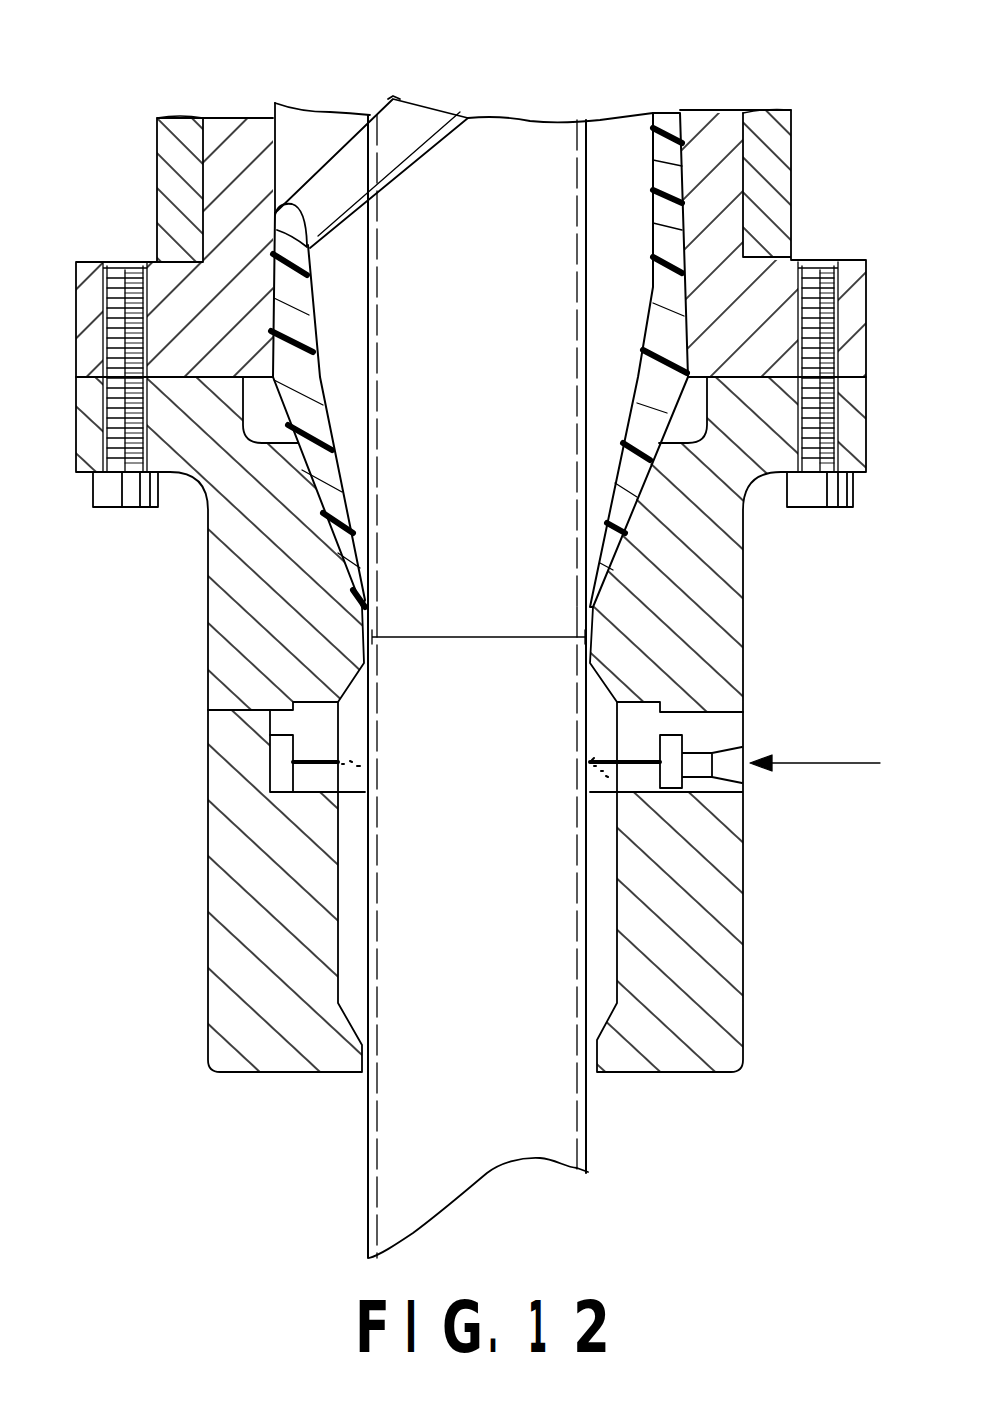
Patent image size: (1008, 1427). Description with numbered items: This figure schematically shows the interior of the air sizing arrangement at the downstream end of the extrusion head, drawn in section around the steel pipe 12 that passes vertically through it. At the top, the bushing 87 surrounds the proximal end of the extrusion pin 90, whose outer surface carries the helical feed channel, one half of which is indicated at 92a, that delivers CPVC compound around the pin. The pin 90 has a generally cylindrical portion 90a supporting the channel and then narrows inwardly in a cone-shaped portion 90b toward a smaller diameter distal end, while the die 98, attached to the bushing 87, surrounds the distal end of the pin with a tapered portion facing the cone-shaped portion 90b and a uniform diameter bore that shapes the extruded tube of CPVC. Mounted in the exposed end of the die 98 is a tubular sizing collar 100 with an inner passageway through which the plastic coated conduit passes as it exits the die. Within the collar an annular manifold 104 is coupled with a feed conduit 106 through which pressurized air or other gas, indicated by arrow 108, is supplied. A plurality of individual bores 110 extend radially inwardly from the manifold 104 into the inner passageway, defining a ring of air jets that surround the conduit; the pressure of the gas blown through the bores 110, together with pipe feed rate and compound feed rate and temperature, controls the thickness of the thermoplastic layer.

The steel pipe 12 is at (490, 952).
The bushing 87 is at (760, 280).
The extrusion pin 90 is at (522, 120).
The generally cylindrical portion 90a is at (563, 291).
The cone-shaped portion 90b is at (562, 482).
The feed channel half 92a is at (430, 155).
The die 98 is at (728, 565).
The tubular sizing collar 100 is at (743, 908).
The annular manifold 104 is at (283, 771).
The feed conduit 106 is at (727, 757).
The pressurized air source 108 is at (827, 767).
The bores 110 is at (637, 757).